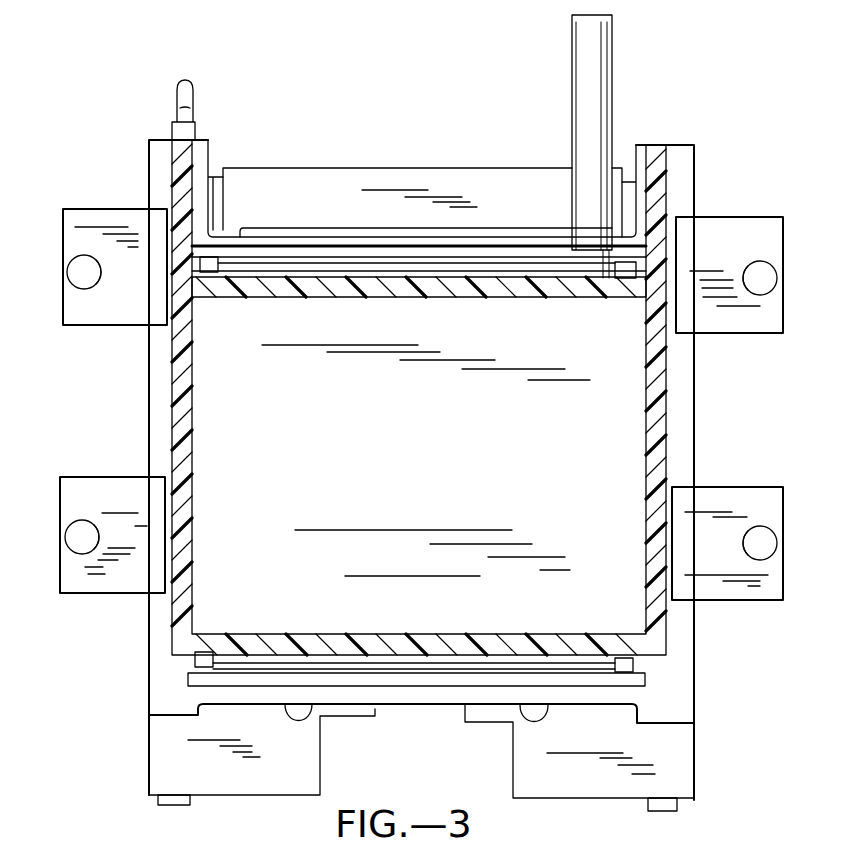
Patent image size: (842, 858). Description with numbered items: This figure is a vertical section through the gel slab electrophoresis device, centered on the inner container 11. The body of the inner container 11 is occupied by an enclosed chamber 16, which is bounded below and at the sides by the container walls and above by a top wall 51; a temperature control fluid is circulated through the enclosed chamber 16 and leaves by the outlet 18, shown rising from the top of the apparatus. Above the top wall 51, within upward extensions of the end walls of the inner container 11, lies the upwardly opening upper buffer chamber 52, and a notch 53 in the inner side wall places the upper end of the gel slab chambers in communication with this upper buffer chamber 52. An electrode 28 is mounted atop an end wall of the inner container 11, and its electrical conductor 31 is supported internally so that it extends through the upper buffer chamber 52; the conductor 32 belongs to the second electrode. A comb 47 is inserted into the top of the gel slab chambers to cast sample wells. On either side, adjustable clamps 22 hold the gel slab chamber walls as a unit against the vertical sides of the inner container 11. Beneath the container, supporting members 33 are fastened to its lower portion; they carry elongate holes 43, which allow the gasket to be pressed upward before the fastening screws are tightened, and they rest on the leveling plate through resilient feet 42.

The inner container 11 is at (646, 111).
The enclosed chamber 16 is at (436, 469).
The outlet 18 is at (613, 40).
The adjustable clamps 22 is at (77, 209).
The electrode 28 is at (192, 86).
The electrical conductor 31 is at (340, 272).
The electrical conductor 32 is at (193, 660).
The supporting members 33 is at (695, 758).
The resilient feet 42 is at (678, 806).
The elongate holes 43 is at (292, 708).
The comb 47 is at (455, 168).
The top wall 51 is at (412, 297).
The upper buffer chamber 52 is at (193, 183).
The notch 53 is at (208, 157).